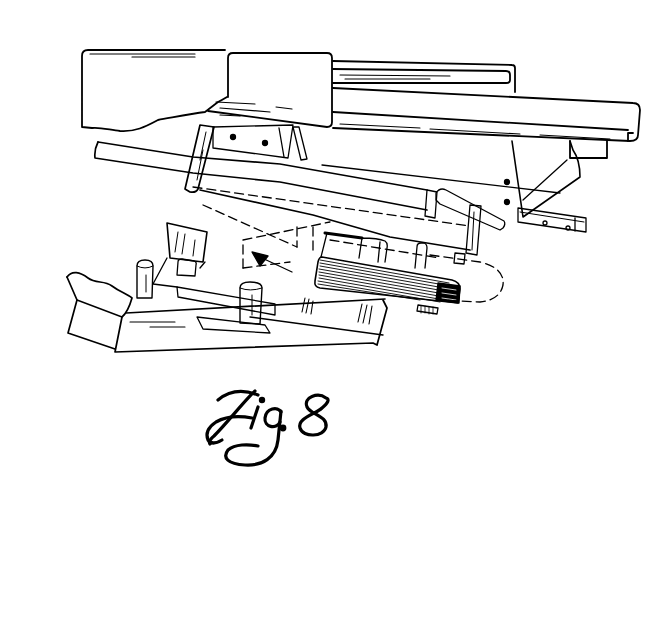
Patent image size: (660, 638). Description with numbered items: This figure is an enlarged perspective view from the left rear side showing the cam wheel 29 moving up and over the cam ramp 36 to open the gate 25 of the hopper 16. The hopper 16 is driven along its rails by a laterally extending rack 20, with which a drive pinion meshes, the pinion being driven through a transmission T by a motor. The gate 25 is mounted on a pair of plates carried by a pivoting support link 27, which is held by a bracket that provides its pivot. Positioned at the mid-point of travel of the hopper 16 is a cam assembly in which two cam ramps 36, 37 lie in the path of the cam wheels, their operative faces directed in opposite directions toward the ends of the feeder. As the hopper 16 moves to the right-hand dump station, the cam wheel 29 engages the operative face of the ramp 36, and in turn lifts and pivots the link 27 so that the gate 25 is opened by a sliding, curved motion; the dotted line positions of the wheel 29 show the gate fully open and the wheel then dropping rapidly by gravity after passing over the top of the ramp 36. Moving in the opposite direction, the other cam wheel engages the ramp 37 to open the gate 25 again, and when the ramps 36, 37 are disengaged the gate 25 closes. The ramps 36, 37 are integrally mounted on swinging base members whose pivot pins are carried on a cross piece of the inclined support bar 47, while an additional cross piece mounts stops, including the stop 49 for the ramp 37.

The transmission T is at (187, 202).
The hopper 16 is at (537, 157).
The rack 20 is at (530, 223).
The gate 25 is at (413, 195).
The support link 27 is at (333, 212).
The cam wheel 29 is at (460, 295).
The cam ramp 36 is at (422, 311).
The cam ramp 37 is at (170, 245).
The inclined support bar 47 is at (177, 333).
The stop 49 is at (200, 267).